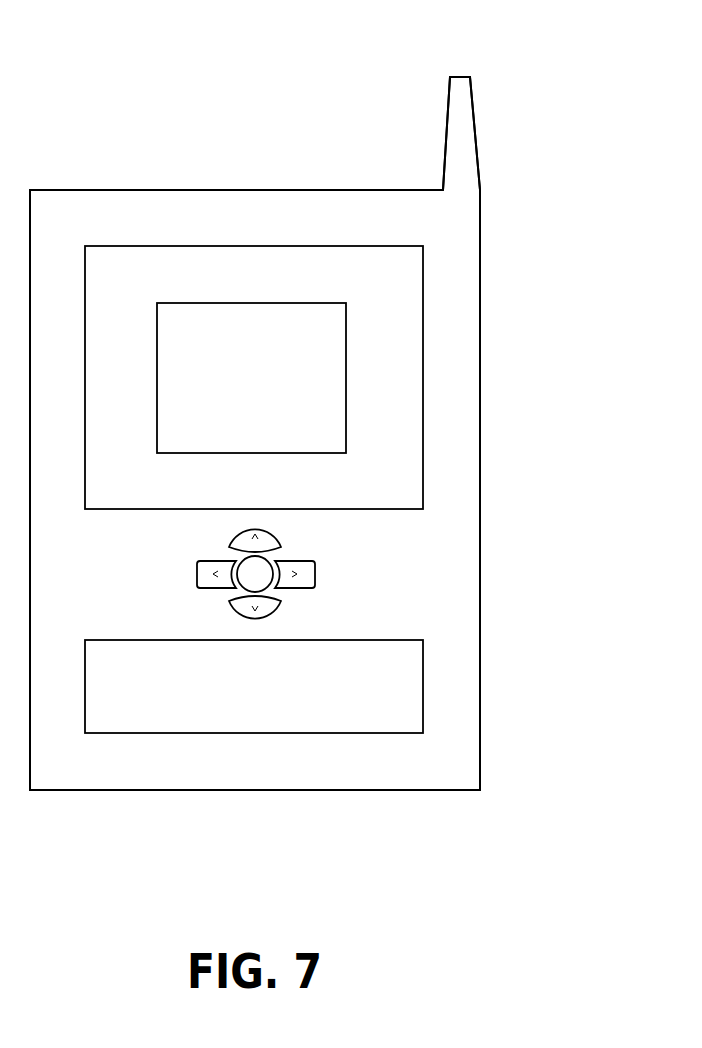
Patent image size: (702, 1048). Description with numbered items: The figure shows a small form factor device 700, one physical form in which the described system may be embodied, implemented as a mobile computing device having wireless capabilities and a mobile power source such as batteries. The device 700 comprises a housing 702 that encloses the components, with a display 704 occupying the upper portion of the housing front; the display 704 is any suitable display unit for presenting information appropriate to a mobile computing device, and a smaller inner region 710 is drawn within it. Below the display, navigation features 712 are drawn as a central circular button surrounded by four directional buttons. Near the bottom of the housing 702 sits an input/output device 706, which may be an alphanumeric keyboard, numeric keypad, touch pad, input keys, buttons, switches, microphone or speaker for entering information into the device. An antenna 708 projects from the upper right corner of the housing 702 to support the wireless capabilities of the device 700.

The small form factor device 700 is at (68, 48).
The housing 702 is at (481, 488).
The display 704 is at (425, 265).
The input/output (I/O) device 706 is at (425, 677).
The antenna 708 is at (442, 123).
The display window 710 is at (347, 395).
The navigation features 712 is at (324, 562).